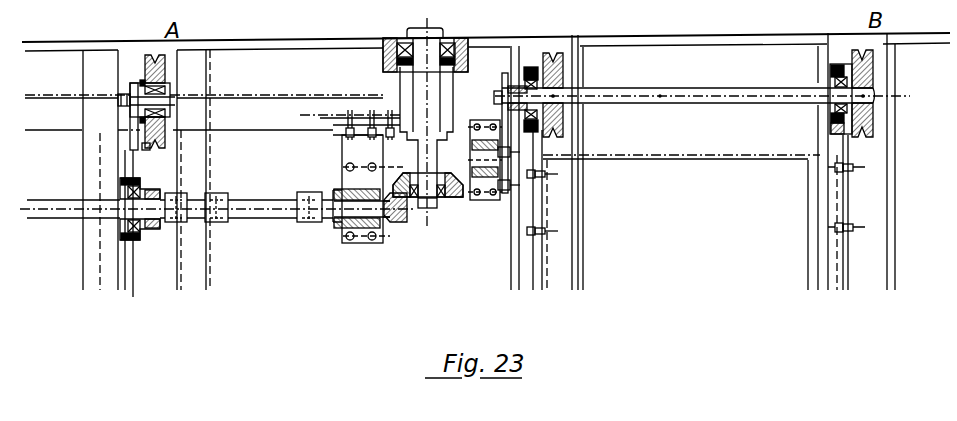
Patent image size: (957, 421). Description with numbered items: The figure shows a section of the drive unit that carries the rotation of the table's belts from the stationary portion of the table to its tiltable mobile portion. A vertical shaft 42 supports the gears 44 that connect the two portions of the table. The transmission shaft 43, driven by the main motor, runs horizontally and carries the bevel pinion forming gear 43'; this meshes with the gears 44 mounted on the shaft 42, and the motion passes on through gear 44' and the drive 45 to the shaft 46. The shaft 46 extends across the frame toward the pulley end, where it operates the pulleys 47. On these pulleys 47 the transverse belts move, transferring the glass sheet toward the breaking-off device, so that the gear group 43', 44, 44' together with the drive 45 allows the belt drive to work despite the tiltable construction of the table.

The shaft 42 is at (425, 38).
The transmission shaft 43 is at (295, 231).
The gear of the gear group 43' is at (418, 227).
The gears 44 is at (448, 211).
The gear of the gear group 44' is at (477, 144).
The drive 45 is at (512, 153).
The shaft 46 is at (682, 96).
The pulleys 47 is at (853, 79).